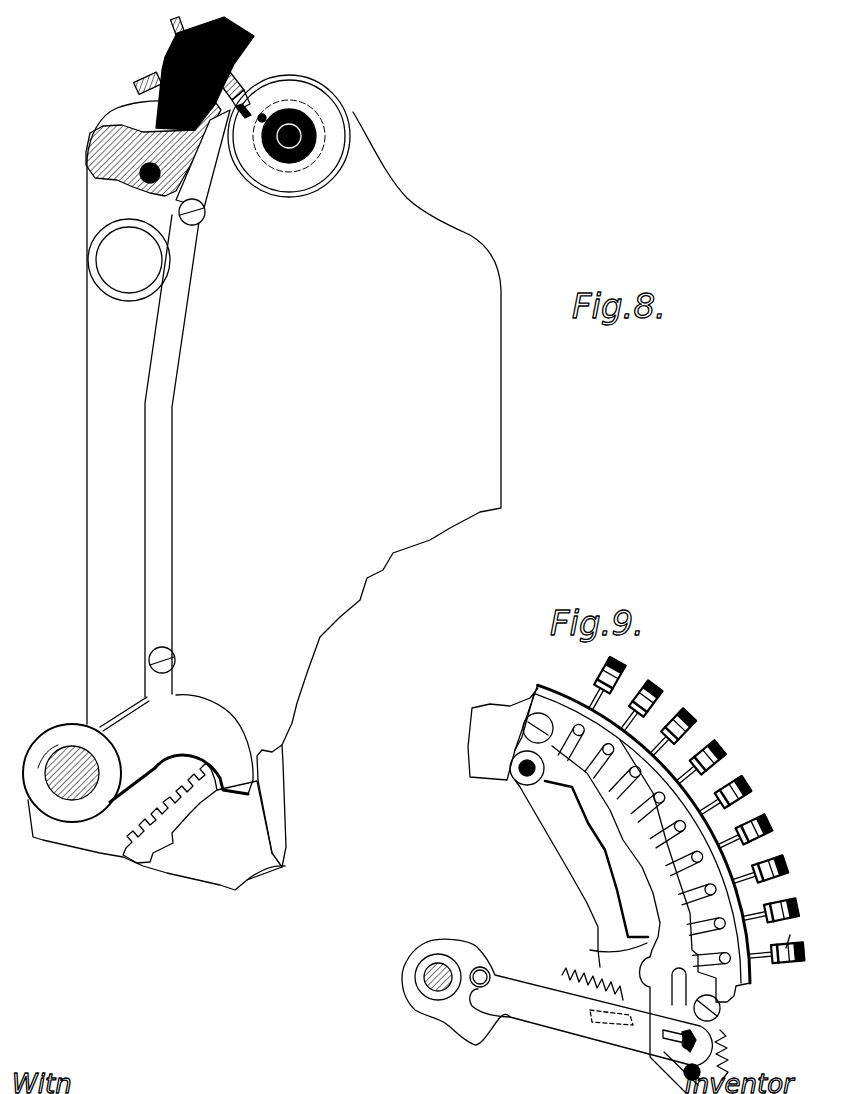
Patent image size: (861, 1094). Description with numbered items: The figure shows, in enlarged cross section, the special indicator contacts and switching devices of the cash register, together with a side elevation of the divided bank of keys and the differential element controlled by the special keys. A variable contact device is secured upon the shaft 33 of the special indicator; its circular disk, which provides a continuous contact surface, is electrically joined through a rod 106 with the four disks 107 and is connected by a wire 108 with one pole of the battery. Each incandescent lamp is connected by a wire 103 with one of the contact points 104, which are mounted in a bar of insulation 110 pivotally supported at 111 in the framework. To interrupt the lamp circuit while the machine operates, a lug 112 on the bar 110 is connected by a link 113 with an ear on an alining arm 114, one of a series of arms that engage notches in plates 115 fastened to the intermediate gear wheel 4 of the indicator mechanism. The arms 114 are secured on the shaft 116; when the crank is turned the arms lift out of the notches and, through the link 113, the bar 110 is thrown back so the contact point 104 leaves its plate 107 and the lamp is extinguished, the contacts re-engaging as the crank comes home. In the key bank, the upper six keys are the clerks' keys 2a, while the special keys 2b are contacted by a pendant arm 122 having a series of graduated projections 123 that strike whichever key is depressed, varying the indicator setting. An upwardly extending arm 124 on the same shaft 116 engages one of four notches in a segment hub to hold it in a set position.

In FIG. 8, the wire 103 is at (195, 48).
In FIG. 8, the bar of insulation 110 is at (228, 30).
In FIG. 8, the wire 108 is at (160, 64).
In FIG. 8, the contact points 104 is at (237, 82).
In FIG. 8, the rod 106 is at (266, 114).
In FIG. 8, the disks 107 is at (318, 135).
In FIG. 8, the shaft of the special indicator 33 is at (309, 150).
In FIG. 8, the pivot 111 is at (150, 183).
In FIG. 8, the lug 112 is at (190, 180).
In FIG. 8, the link 113 is at (166, 463).
In FIG. 8, the alining arm 114 is at (210, 716).
In FIG. 8, the plates 115 is at (228, 822).
In FIG. 8, the shaft 116 is at (70, 795).
In FIG. 8, the intermediate gear wheel 4 is at (143, 812).
In FIG. 9, the clerks' keys 2a is at (672, 718).
In FIG. 9, the special keys 2b is at (796, 935).
In FIG. 9, the pendant arm 122 is at (596, 882).
In FIG. 9, the graduated projections 123 is at (635, 963).
In FIG. 9, the upwardly extending arm 124 is at (522, 776).